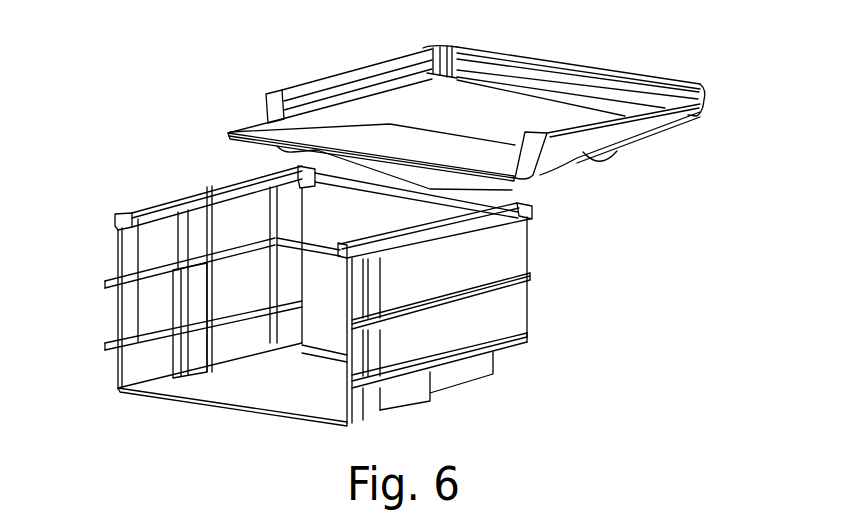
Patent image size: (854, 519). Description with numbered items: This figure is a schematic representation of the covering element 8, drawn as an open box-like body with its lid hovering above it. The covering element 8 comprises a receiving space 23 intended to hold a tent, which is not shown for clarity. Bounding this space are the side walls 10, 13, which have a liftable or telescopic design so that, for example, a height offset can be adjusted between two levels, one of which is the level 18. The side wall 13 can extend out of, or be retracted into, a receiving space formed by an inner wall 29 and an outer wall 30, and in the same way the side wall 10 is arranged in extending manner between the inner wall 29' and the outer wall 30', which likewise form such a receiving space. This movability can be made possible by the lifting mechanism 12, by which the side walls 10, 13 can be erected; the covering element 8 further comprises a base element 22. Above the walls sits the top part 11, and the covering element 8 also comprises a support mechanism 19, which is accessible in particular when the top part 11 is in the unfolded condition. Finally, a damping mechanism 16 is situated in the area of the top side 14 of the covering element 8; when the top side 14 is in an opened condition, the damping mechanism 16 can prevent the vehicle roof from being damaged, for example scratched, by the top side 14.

The covering element 8 is at (158, 105).
The side wall 10 is at (510, 246).
The top part 11 is at (699, 118).
The lifting mechanism 12 is at (202, 303).
The side wall 13 is at (185, 187).
The top side 14 is at (658, 142).
The damping mechanism 16 is at (603, 170).
The level 18 is at (133, 173).
The support mechanism 19 is at (521, 108).
The base element 22 is at (232, 383).
The receiving space 23 is at (331, 321).
The inner wall 29 is at (167, 256).
The inner wall 29' is at (344, 368).
The outer wall 30 is at (81, 304).
The outer wall 30' is at (463, 370).